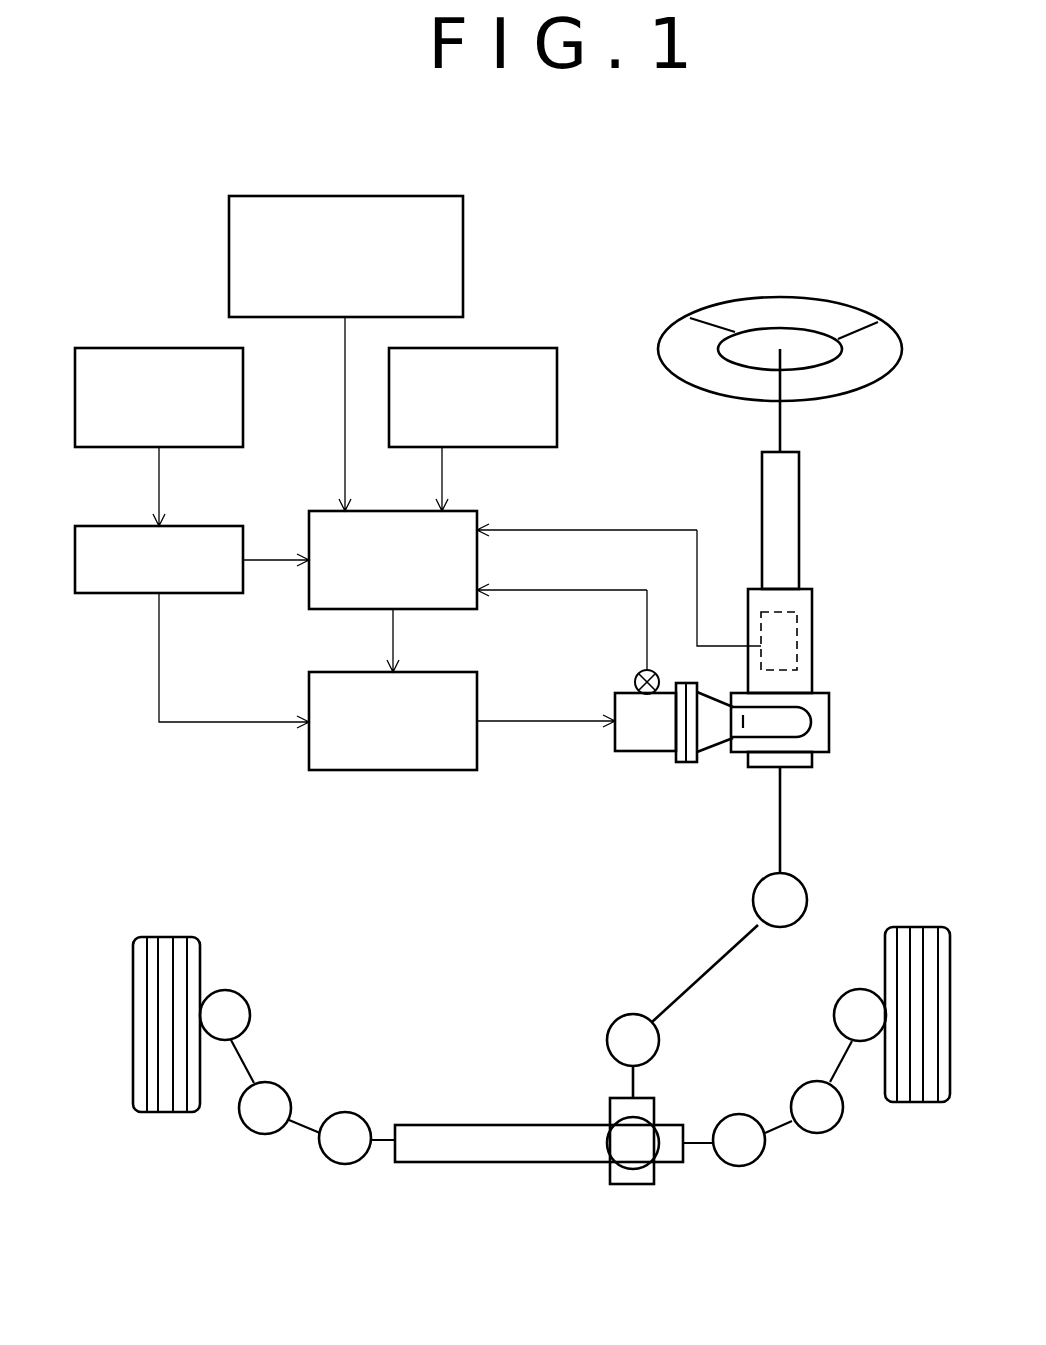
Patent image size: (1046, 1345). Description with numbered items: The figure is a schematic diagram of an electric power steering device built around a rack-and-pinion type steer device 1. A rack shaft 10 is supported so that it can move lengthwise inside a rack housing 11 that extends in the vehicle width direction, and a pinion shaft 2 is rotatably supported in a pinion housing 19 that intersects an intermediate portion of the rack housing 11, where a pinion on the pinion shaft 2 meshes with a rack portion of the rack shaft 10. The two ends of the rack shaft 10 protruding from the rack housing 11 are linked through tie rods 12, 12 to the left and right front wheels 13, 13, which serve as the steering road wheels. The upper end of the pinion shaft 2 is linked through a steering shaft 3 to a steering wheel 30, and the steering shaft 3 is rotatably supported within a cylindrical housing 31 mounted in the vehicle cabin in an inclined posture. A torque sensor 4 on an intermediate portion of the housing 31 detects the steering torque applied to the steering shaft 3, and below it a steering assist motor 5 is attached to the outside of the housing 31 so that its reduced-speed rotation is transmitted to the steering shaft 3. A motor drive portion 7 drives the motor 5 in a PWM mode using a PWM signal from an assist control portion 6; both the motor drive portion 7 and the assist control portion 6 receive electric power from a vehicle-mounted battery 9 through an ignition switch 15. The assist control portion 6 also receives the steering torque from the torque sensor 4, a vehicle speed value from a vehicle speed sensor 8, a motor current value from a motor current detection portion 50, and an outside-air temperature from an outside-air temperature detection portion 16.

The steer device 1 is at (528, 1212).
The pinion shaft 2 is at (633, 1078).
The steering shaft 3 is at (780, 428).
The torque sensor 4 is at (797, 640).
The motor 5 is at (638, 752).
The assist control portion 6 is at (458, 511).
The motor drive portion 7 is at (459, 672).
The vehicle speed sensor 8 is at (537, 348).
The vehicle-mounted battery 9 is at (104, 348).
The rack shaft 10 is at (380, 1145).
The rack housing 11 is at (497, 1125).
The tie rod 12 is at (300, 1130).
The front wheel 13 is at (133, 970).
The ignition switch 15 is at (103, 526).
The outside-air temperature detection portion 16 is at (463, 262).
The pinion housing 19 is at (610, 1108).
The steering wheel 30 is at (680, 318).
The housing 31 is at (799, 517).
The motor current detection portion 50 is at (637, 675).